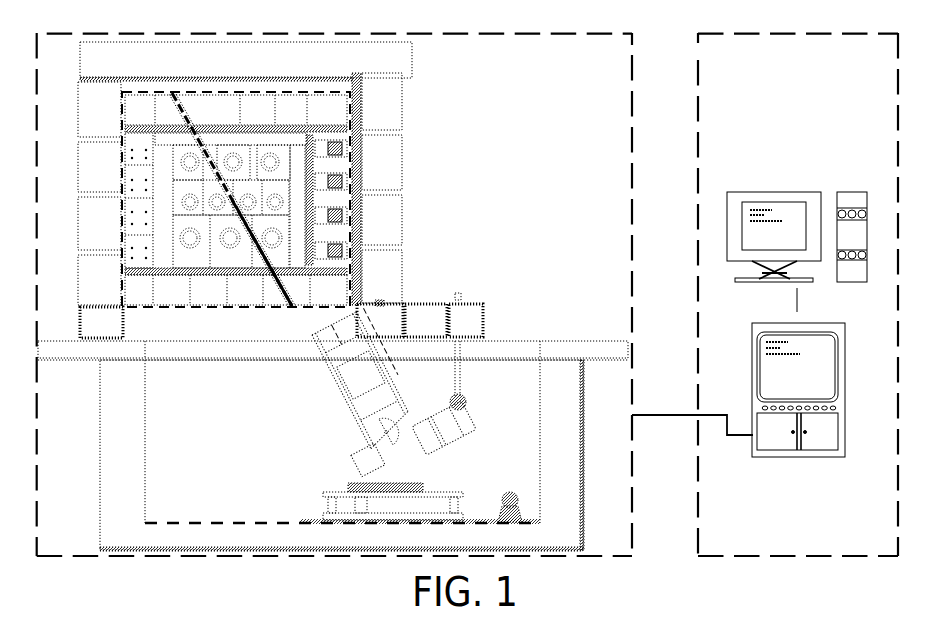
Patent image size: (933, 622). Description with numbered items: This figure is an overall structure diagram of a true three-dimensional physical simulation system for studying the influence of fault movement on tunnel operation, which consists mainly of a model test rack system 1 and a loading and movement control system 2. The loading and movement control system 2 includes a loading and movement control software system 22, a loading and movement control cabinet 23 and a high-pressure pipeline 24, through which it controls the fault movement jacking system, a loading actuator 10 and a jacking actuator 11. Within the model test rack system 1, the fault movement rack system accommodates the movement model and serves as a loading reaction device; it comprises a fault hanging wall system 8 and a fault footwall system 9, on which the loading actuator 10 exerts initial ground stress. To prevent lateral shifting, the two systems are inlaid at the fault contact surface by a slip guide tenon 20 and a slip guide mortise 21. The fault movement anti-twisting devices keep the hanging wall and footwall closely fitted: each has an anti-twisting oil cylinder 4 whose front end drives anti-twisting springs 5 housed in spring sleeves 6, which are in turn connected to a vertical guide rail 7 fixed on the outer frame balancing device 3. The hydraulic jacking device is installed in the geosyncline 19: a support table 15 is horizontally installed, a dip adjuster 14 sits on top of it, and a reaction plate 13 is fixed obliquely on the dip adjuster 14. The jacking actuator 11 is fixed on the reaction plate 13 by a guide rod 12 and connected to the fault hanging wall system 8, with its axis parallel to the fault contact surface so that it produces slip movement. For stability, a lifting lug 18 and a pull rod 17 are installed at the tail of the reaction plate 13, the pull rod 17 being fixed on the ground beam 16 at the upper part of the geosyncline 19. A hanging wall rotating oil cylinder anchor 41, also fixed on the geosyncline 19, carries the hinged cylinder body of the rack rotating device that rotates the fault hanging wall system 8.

The model test rack system 1 is at (400, 35).
The loading and movement control system 2 is at (800, 34).
The outer frame balancing device 3 is at (393, 97).
The anti-twisting oil cylinder 4 is at (312, 140).
The anti-twisting spring 5 is at (348, 152).
The spring sleeve 6 is at (350, 167).
The vertical guide rail 7 is at (358, 170).
The fault hanging wall system 8 is at (255, 92).
The fault footwall system 9 is at (152, 95).
The loading actuator 10 is at (185, 160).
The jacking actuator 11 is at (363, 397).
The guide rod 12 is at (360, 428).
The reaction plate 13 is at (363, 468).
The dip adjuster 14 is at (352, 490).
The support table 15 is at (335, 513).
The ground beam 16 is at (463, 323).
The pull rod 17 is at (460, 348).
The lifting lug 18 is at (468, 403).
The geosyncline 19 is at (128, 442).
The slip guide tenon 20 is at (283, 302).
The slip guide mortise 21 is at (283, 302).
The loading and movement control software system 22 is at (785, 192).
The loading and movement control cabinet 23 is at (812, 323).
The high-pressure pipeline 24 is at (740, 435).
The hanging wall rotating oil cylinder anchor 41 is at (513, 500).